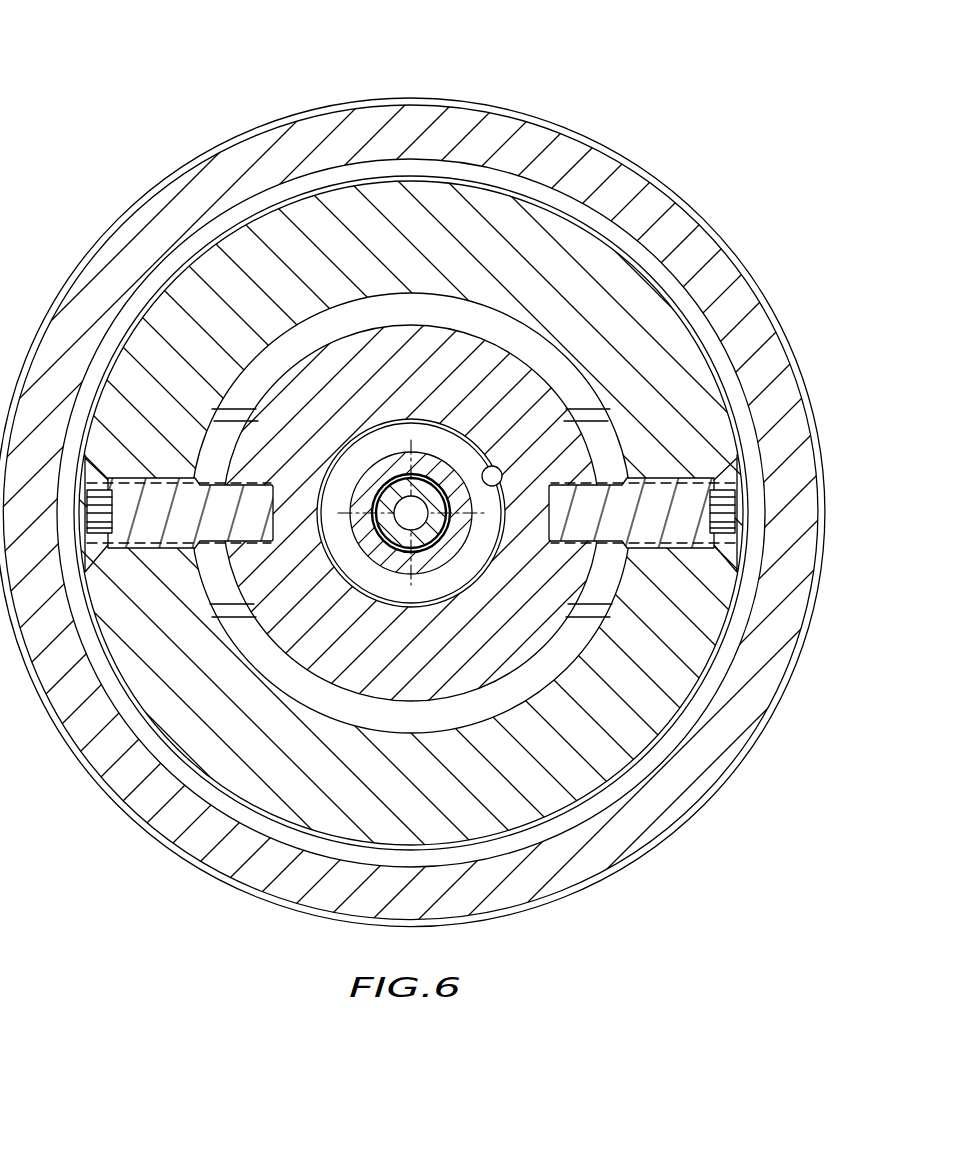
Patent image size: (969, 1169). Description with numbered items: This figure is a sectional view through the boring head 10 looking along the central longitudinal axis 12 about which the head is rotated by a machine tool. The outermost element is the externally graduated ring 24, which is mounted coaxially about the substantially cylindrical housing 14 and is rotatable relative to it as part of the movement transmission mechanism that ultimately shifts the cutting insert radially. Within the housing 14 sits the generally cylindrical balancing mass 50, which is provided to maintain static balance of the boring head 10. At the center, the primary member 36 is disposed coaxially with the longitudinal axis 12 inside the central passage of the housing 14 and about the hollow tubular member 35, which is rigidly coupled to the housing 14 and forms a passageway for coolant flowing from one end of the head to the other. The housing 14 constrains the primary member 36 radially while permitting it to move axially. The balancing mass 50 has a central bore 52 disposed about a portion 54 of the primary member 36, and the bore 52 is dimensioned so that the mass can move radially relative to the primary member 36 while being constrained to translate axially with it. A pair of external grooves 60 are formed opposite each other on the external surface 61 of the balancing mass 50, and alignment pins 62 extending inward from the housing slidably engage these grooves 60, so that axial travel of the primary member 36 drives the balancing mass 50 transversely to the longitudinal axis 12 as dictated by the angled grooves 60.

The boring head 10 is at (637, 90).
The central longitudinal axis 12 is at (392, 500).
The housing 14 is at (598, 267).
The ring 24 is at (717, 267).
The hollow tubular member 35 is at (422, 537).
The primary member 36 is at (383, 555).
The balancing mass 50 is at (447, 356).
The central bore 52 is at (501, 482).
The portion of primary member 54 is at (363, 530).
The external grooves 60 is at (250, 537).
The external surface 61 is at (428, 314).
The alignment pins 62 is at (221, 477).